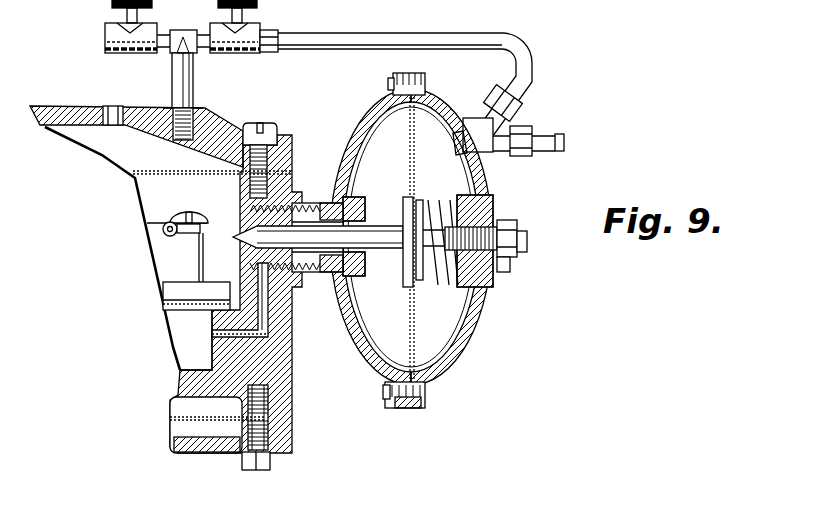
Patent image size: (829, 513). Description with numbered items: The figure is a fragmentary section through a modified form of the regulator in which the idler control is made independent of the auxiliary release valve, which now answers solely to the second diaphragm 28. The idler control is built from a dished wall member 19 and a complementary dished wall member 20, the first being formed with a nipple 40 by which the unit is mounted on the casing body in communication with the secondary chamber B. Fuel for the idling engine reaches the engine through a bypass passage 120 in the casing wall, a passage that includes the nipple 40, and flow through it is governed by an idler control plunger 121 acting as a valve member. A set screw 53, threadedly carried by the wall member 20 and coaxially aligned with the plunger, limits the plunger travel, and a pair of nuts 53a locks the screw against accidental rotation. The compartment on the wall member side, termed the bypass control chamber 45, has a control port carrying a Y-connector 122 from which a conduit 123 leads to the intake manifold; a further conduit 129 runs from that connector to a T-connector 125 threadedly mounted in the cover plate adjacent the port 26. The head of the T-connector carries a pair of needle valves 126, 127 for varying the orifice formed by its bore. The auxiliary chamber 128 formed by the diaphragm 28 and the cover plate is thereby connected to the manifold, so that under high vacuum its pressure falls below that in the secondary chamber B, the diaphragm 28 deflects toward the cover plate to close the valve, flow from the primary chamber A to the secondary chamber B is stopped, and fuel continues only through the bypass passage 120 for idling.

The needle valve 126 is at (121, 41).
The needle valve 127 is at (237, 57).
The T-connector 125 is at (194, 87).
The port 26 is at (117, 106).
The auxiliary chamber 128 is at (118, 143).
The second diaphragm 28 is at (159, 175).
The secondary chamber B is at (150, 203).
The primary chamber A is at (188, 336).
The bypass passage 120 is at (268, 332).
The idler control plunger 121 is at (365, 242).
The nipple 40 is at (314, 275).
The dished wall member 19 is at (372, 356).
The complementary dished wall member 20 is at (445, 352).
The bypass control chamber 45 is at (446, 188).
The vacuum pipe 129 is at (533, 72).
The Y-connector 122 is at (477, 150).
The conduit 123 is at (548, 136).
The set screw 53 is at (520, 233).
The nuts 53a is at (508, 270).